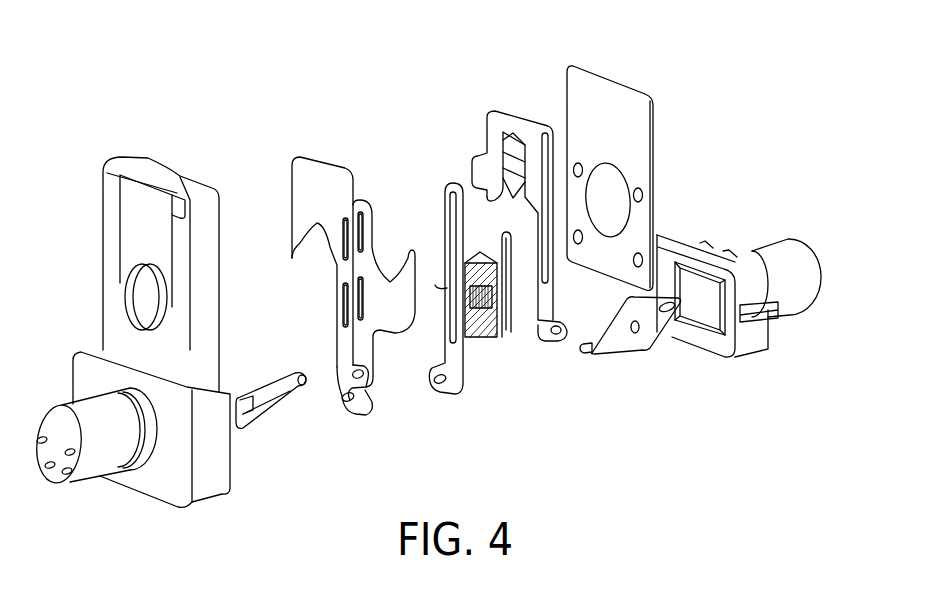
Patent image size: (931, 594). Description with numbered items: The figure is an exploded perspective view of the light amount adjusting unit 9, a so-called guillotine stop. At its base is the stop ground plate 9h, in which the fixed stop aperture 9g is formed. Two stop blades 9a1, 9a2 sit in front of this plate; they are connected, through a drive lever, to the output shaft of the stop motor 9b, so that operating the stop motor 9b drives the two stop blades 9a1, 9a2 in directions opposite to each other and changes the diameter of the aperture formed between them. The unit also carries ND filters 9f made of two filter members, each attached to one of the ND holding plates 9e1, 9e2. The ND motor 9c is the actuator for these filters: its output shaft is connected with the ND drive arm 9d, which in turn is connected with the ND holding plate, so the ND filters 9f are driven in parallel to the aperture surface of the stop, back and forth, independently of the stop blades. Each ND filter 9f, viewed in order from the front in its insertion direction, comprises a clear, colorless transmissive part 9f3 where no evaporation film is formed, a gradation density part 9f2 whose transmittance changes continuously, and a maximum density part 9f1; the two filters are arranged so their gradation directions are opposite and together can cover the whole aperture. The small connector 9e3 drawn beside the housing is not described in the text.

The light amount adjusting unit 9 is at (700, 69).
The stop ground plate 9h is at (110, 184).
The fixed stop aperture 9g is at (148, 297).
The stop motor 9b is at (97, 466).
The connector plug 9e3 is at (270, 398).
The stop blade 9a1 is at (292, 163).
The stop blade 9a2 is at (368, 395).
The ND filter 9f is at (435, 285).
The ND holding plate 9e1 is at (505, 130).
The ND holding plate 9e2 is at (457, 394).
The transmissive part 9f3 is at (478, 262).
The maximum density part 9f1 is at (480, 332).
The gradation density part 9f2 is at (495, 302).
The ND drive arm 9d is at (620, 342).
The ND motor 9c is at (793, 297).